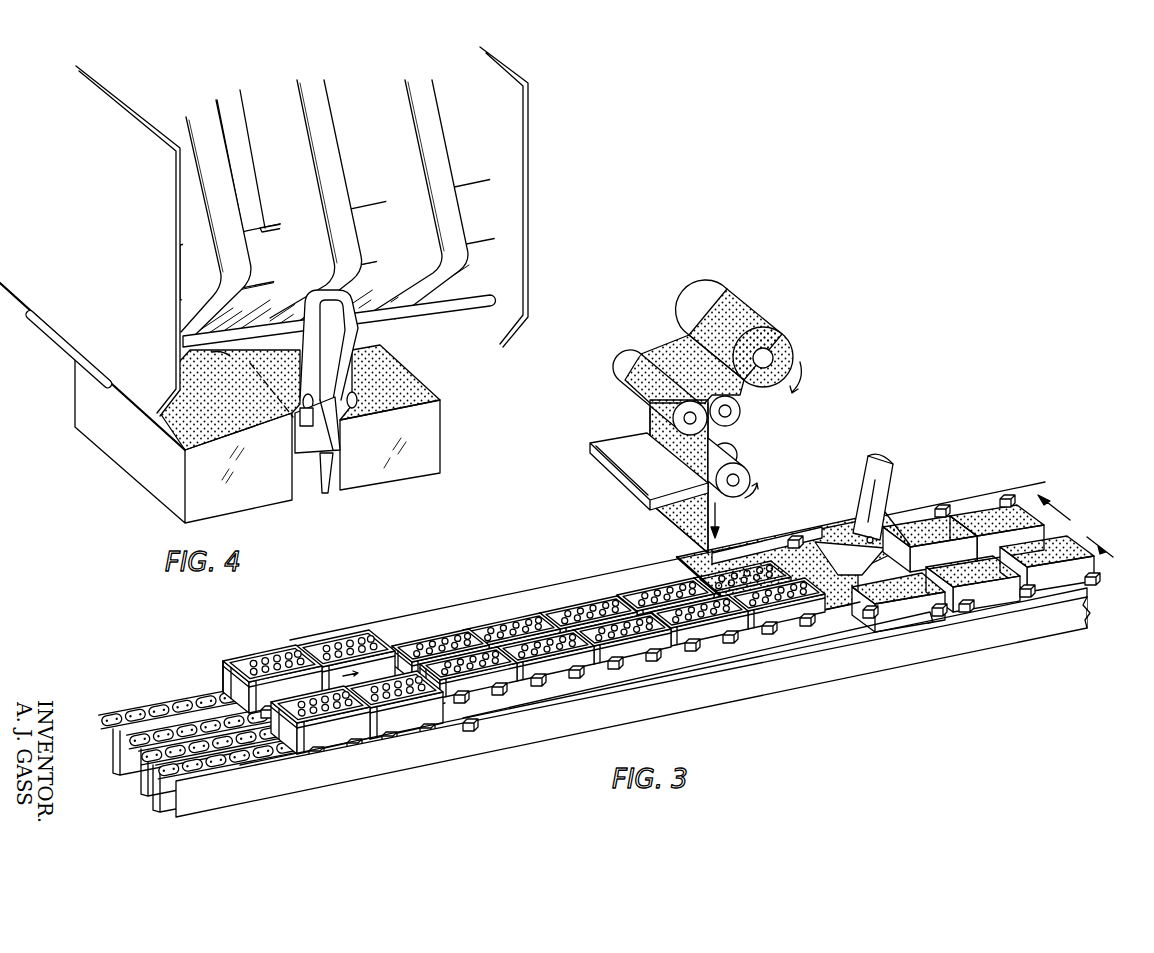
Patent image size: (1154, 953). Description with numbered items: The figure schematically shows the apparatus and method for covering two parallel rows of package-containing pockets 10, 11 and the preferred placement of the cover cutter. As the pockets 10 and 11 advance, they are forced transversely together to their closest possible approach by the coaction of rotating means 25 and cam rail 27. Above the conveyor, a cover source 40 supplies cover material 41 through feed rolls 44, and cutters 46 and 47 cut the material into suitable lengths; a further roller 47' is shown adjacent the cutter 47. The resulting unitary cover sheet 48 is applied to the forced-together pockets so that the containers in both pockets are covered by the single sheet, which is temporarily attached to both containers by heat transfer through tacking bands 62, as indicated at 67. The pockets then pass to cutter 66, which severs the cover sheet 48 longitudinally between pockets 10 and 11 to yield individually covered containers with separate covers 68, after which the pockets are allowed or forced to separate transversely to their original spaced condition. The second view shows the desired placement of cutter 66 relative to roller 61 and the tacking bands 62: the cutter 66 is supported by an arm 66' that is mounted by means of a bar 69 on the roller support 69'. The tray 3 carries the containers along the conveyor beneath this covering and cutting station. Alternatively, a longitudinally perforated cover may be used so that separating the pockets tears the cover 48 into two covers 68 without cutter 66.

In FIG. 3, the tray 3 is at (262, 658).
In FIG. 4, the pocket 10 is at (403, 383).
In FIG. 3, the pocket 10 is at (222, 681).
In FIG. 4, the pocket 11 is at (108, 447).
In FIG. 3, the pocket 11 is at (353, 735).
In FIG. 3, the rotating means 25 is at (307, 740).
In FIG. 3, the cam rail 27 is at (837, 653).
In FIG. 3, the cover source 40 is at (767, 355).
In FIG. 3, the cover material 41 is at (747, 387).
In FIG. 3, the feed rolls 44 is at (643, 393).
In FIG. 3, the cutter 46 is at (640, 490).
In FIG. 3, the cutter 47 is at (746, 468).
In FIG. 3, the lower roller 47' is at (745, 455).
In FIG. 4, the cover sheet 48 is at (222, 360).
In FIG. 3, the cover sheet 48 is at (717, 560).
In FIG. 4, the roller 61 is at (485, 190).
In FIG. 4, the tacking bands 62 is at (414, 128).
In FIG. 4, the cutter 66 is at (317, 452).
In FIG. 3, the cutter 66 is at (854, 514).
In FIG. 4, the arm 66' is at (354, 350).
In FIG. 3, the temporarily attached cover 67 is at (773, 563).
In FIG. 4, the individual covers 68 is at (247, 427).
In FIG. 3, the individual covers 68 is at (985, 507).
In FIG. 4, the bar 69 is at (339, 321).
In FIG. 4, the roller support 69' is at (527, 197).